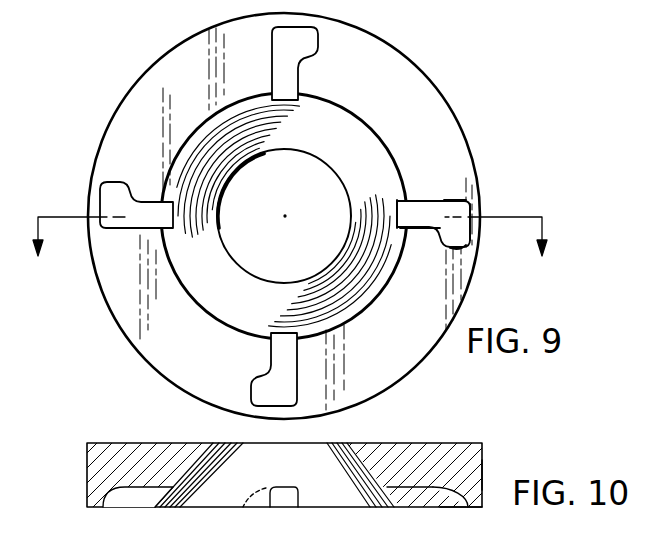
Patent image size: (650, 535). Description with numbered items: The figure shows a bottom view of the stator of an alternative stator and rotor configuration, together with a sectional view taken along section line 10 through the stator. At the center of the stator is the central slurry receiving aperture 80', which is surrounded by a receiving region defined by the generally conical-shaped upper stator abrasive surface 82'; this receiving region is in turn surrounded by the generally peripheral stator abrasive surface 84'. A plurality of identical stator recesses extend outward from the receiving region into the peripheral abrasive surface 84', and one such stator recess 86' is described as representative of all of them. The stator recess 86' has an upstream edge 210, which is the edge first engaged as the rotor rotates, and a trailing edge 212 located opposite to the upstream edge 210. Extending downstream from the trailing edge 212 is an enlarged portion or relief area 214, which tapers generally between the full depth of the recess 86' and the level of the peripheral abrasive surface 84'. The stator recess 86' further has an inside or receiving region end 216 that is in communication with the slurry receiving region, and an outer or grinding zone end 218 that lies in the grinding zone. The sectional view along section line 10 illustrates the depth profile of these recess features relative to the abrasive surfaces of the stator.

In FIG. 9, the section line 10 is at (293, 250).
In FIG. 10, the central slurry receiving aperture 80' is at (290, 462).
In FIG. 9, the upper stator abrasive surface 82' is at (284, 216).
In FIG. 10, the upper stator abrasive surface 82' is at (274, 475).
In FIG. 9, the peripheral stator abrasive surface 84' is at (284, 216).
In FIG. 10, the peripheral stator abrasive surface 84' is at (477, 519).
In FIG. 9, the stator recess 86' is at (285, 216).
In FIG. 9, the upstream edge 210 is at (446, 199).
In FIG. 10, the upstream edge 210 is at (123, 500).
In FIG. 9, the trailing edge 212 is at (426, 231).
In FIG. 10, the trailing edge 212 is at (419, 502).
In FIG. 9, the relief area 214 is at (461, 238).
In FIG. 10, the relief area 214 is at (443, 503).
In FIG. 9, the receiving region end 216 is at (397, 208).
In FIG. 10, the receiving region end 216 is at (318, 509).
In FIG. 9, the grinding zone end 218 is at (471, 203).
In FIG. 10, the grinding zone end 218 is at (483, 476).